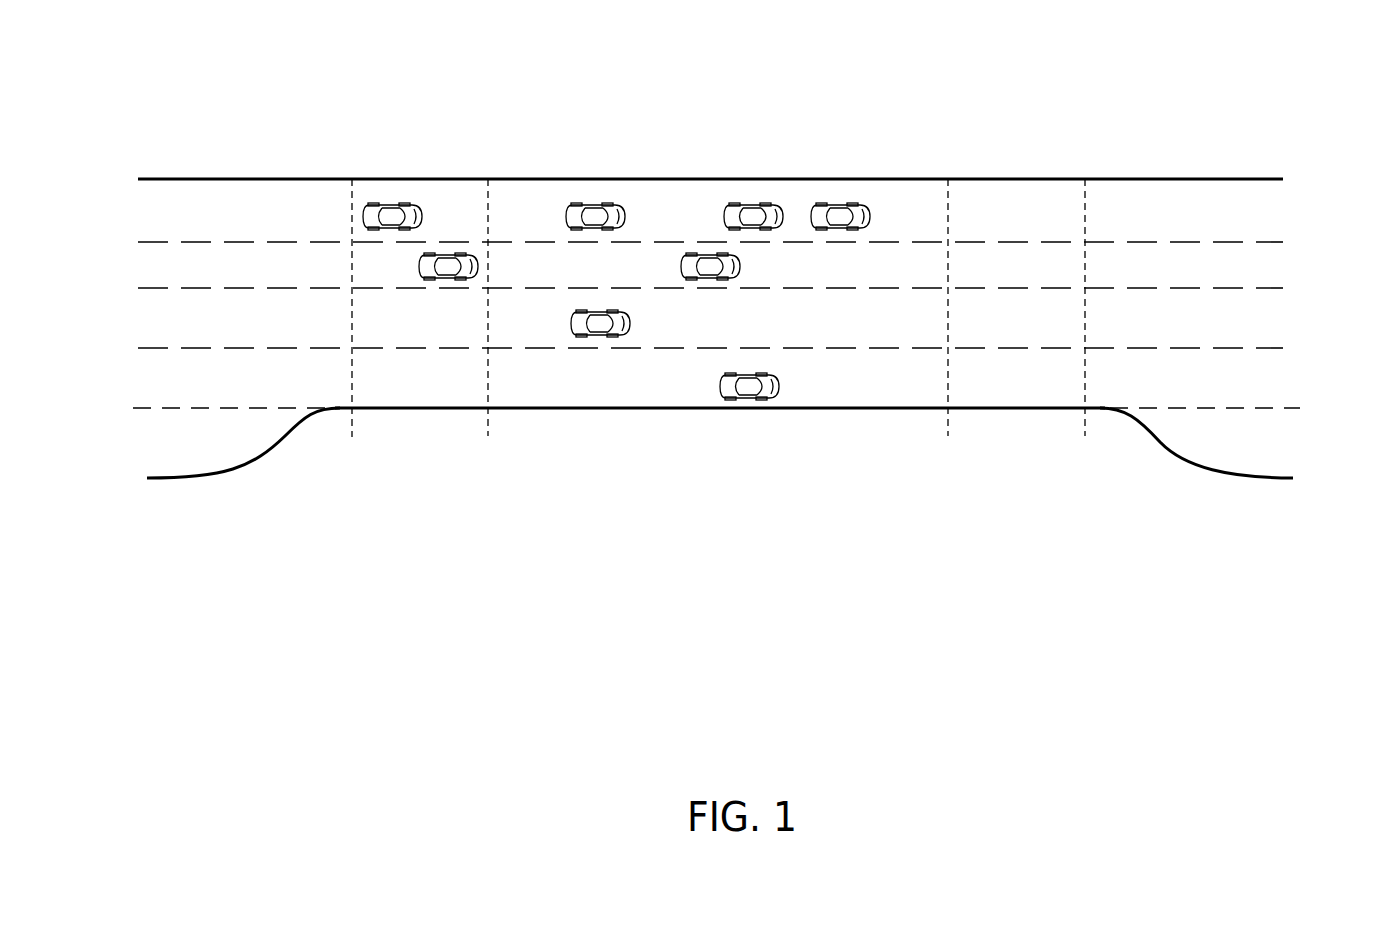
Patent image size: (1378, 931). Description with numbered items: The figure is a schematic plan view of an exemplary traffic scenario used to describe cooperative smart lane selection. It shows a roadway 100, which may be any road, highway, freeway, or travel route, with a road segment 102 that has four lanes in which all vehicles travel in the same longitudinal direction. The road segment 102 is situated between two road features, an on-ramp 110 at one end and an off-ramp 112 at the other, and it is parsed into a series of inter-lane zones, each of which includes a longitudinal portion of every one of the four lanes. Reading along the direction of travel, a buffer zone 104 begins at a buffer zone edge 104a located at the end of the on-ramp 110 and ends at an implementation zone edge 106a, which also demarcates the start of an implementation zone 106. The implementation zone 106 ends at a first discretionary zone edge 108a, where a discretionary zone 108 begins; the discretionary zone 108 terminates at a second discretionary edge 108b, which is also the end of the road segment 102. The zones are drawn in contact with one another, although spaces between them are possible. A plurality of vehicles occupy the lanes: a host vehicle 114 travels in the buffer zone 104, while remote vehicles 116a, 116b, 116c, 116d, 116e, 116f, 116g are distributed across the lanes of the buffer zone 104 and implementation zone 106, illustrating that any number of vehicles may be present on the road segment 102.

The roadway 100 is at (305, 74).
The road segment 102 is at (352, 493).
The buffer zone 104 is at (352, 167).
The implementation zone 106 is at (488, 167).
The discretionary zone 108 is at (1085, 167).
The buffer zone edge 104a is at (352, 422).
The implementation zone edge 106a is at (488, 422).
The first discretionary zone edge 108a is at (948, 422).
The second discretionary edge 108b is at (1085, 422).
The on-ramp 110 is at (134, 408).
The off-ramp 112 is at (1301, 408).
The host vehicle 114 is at (423, 216).
The remote vehicle 116a is at (418, 266).
The remote vehicle 116b is at (565, 216).
The remote vehicle 116c is at (723, 216).
The remote vehicle 116d is at (871, 216).
The remote vehicle 116e is at (741, 266).
The remote vehicle 116f is at (631, 323).
The remote vehicle 116g is at (780, 386).